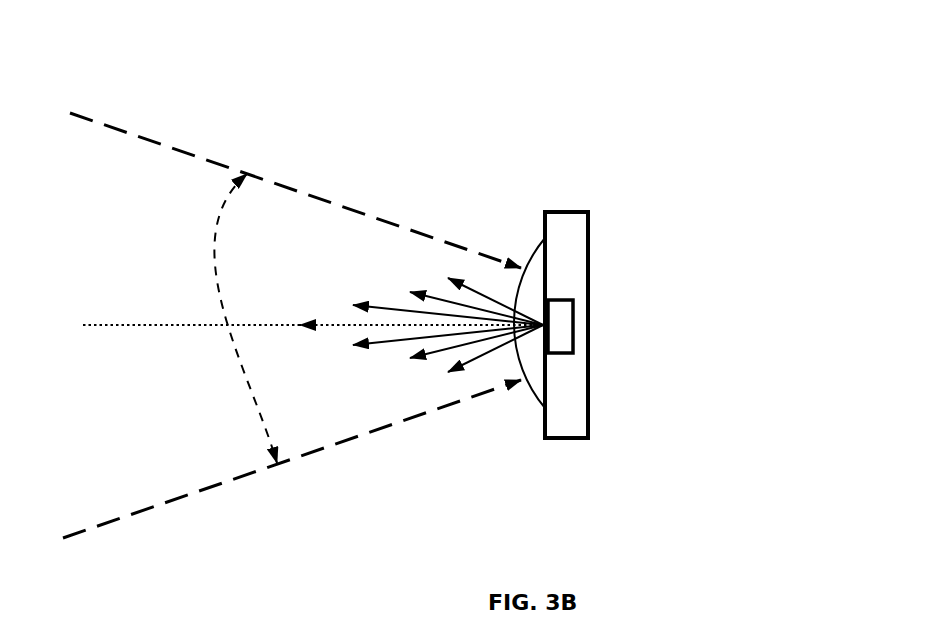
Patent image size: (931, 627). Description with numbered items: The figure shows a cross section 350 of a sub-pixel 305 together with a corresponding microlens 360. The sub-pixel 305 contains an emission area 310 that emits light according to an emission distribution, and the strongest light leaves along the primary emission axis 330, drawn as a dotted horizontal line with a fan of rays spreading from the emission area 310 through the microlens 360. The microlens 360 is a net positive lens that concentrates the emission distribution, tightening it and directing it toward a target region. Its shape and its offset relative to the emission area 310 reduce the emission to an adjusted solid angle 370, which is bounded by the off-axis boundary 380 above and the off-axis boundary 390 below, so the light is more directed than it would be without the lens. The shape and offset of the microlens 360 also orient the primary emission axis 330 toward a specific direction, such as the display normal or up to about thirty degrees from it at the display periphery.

The cross section 350 is at (68, 42).
The sub-pixel 305 is at (588, 213).
The emission area 310 is at (563, 325).
The primary emission axis 330 is at (93, 325).
The microlens 360 is at (535, 392).
The adjusted solid angle 370 is at (195, 318).
The off-axis boundary 380 is at (297, 188).
The off-axis boundary 390 is at (220, 485).